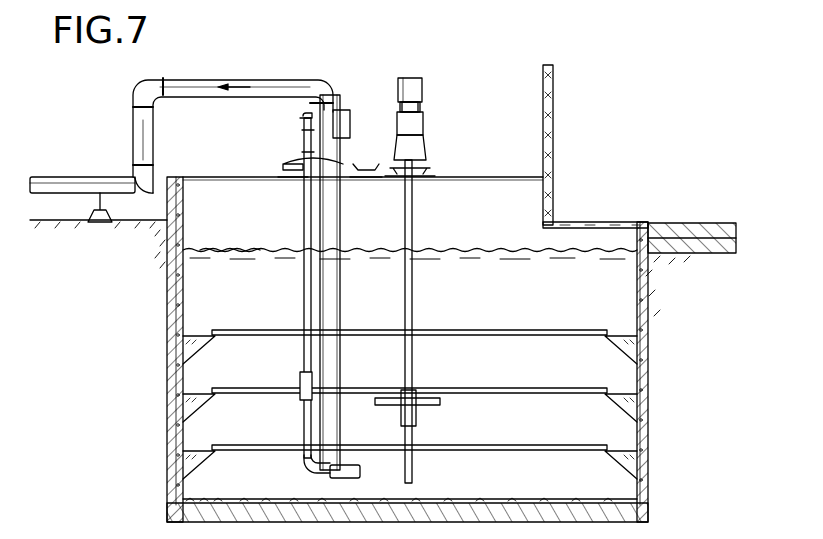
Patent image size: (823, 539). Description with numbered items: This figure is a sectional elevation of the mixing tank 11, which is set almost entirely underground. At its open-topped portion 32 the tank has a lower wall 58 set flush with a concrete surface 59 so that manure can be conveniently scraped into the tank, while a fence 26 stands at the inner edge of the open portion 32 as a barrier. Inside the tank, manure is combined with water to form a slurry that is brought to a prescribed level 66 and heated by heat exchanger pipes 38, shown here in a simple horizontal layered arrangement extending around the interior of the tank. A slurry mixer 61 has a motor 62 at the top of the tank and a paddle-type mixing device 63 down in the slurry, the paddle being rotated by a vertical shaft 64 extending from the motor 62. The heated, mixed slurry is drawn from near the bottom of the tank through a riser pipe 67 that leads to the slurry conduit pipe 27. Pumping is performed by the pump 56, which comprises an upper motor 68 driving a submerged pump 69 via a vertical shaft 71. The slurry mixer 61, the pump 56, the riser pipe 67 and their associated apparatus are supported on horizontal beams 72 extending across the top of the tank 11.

The mixing tank 11 is at (150, 318).
The fence 26 is at (555, 106).
The slurry conduit pipe 27 is at (72, 177).
The open-topped portion 32 is at (608, 218).
The heat exchanger pipes 38 is at (253, 329).
The pump 56 is at (347, 108).
The lower wall 58 is at (662, 222).
The concrete surface 59 is at (708, 223).
The slurry mixer 61 is at (425, 88).
The motor 62 is at (421, 102).
The paddle-type mixing device 63 is at (422, 400).
The vertical shaft 64 is at (412, 216).
The prescribed level 66 is at (239, 248).
The riser pipe 67 is at (335, 303).
The upper motor 68 is at (350, 122).
The submerged pump 69 is at (340, 465).
The vertical shaft 71 is at (334, 243).
The horizontal beams 72 is at (284, 172).